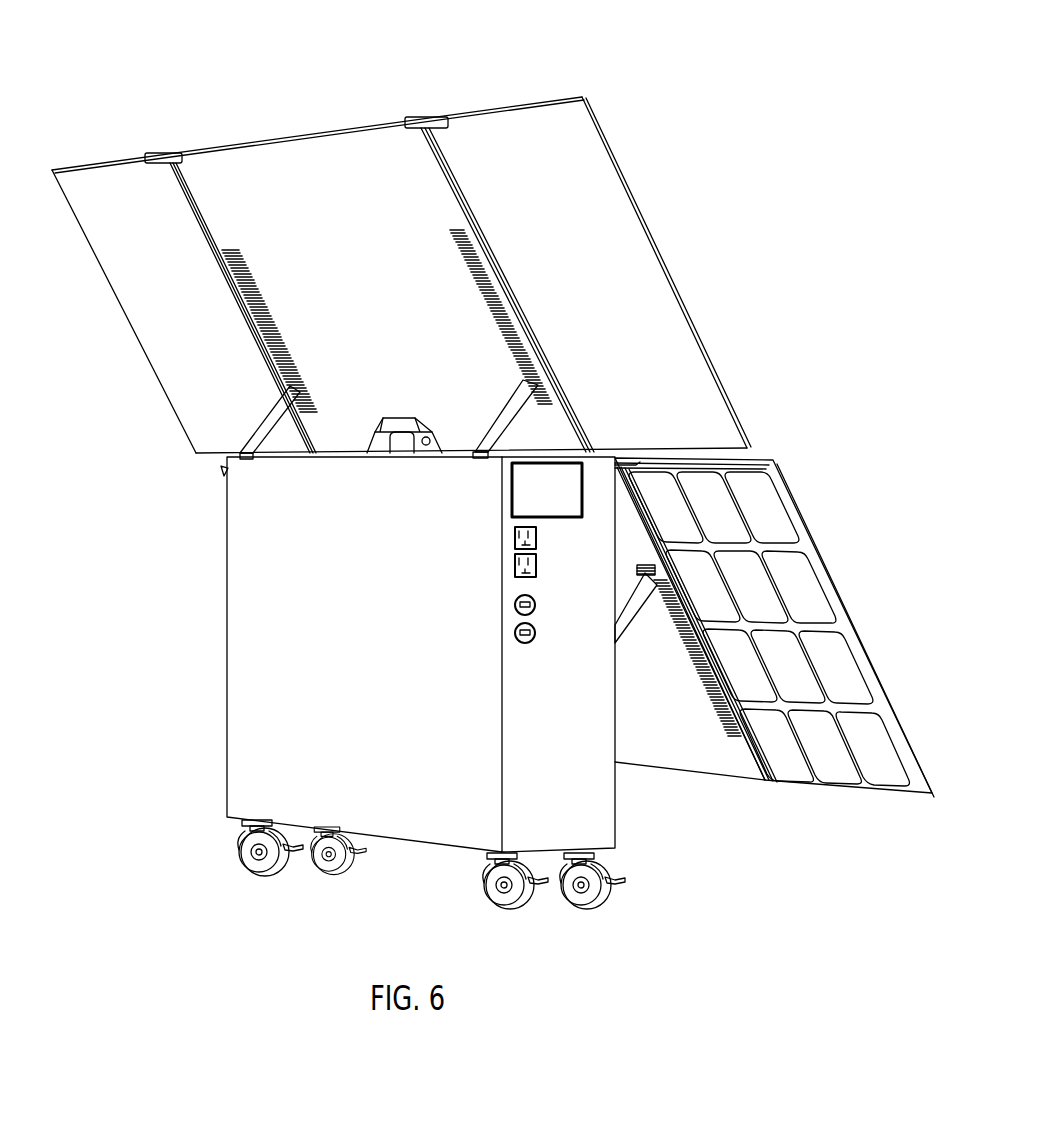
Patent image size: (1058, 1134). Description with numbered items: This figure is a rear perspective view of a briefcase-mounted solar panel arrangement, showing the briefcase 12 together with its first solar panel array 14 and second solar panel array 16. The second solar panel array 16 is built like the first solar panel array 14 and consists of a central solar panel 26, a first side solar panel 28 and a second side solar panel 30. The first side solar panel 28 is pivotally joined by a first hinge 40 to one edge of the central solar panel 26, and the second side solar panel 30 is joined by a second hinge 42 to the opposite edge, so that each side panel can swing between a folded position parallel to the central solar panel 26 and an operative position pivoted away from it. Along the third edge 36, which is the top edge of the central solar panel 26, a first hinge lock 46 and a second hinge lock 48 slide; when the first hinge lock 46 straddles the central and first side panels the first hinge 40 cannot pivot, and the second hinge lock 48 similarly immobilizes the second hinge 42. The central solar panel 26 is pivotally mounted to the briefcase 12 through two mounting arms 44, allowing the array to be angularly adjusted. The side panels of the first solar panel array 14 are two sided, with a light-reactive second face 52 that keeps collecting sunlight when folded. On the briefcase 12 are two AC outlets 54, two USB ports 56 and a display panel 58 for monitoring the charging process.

The briefcase 12 is at (142, 648).
The first solar panel array 14 is at (774, 686).
The second solar panel array 16 is at (384, 232).
The central solar panel 26 is at (367, 146).
The first side solar panel 28 is at (102, 289).
The second side solar panel 30 is at (626, 225).
The third edge 36 is at (298, 118).
The first hinge 40 is at (180, 214).
The second hinge 42 is at (463, 162).
The mounting arms 44 is at (246, 416).
The first hinge lock 46 is at (163, 137).
The second hinge lock 48 is at (440, 68).
The second face 52 is at (798, 686).
The AC outlets 54 is at (501, 573).
The USB ports 56 is at (511, 654).
The display panel 58 is at (498, 496).